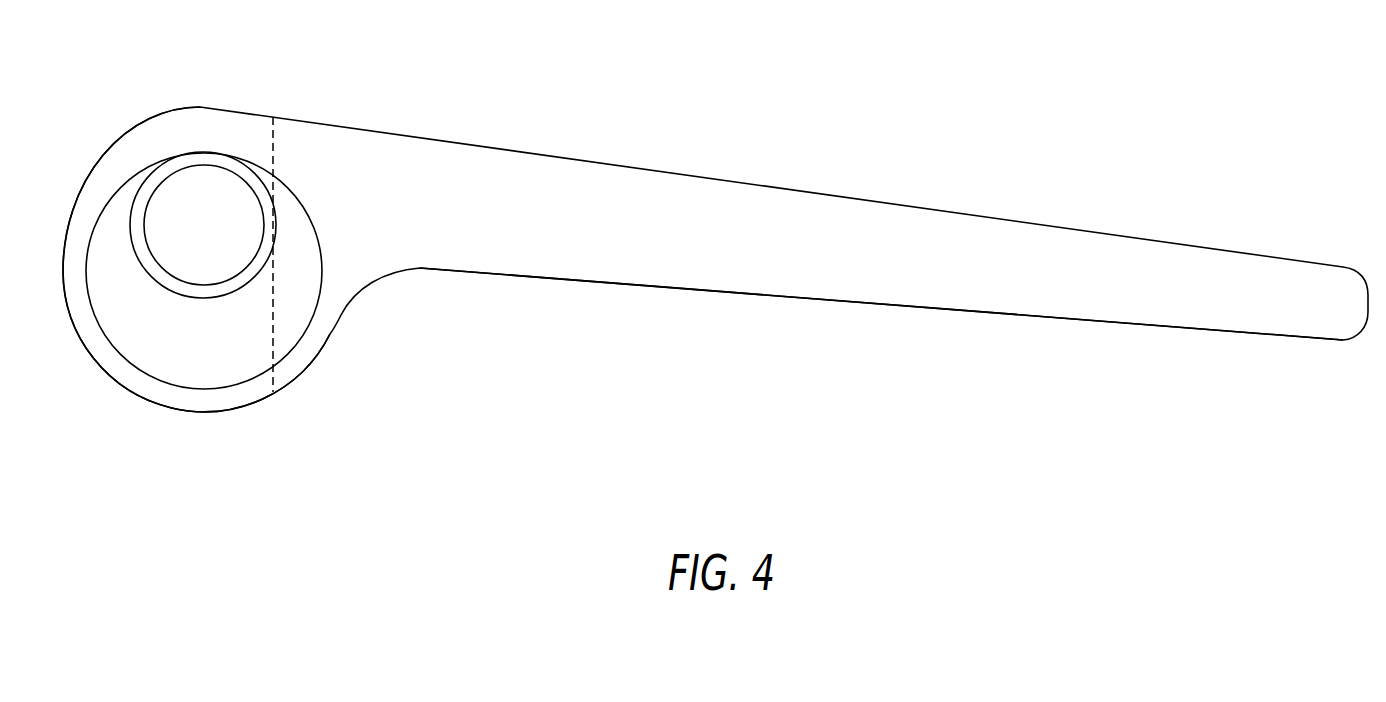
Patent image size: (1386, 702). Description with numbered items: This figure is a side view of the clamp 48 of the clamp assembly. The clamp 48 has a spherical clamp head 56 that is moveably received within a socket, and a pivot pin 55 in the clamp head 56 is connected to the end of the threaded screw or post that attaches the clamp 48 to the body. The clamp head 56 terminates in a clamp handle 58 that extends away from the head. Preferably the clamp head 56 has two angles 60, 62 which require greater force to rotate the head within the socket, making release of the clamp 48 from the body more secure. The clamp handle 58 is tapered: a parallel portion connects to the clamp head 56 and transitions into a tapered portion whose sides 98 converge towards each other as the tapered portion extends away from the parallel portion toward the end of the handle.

The clamp 48 is at (836, 70).
The pivot pin 55 is at (210, 197).
The spherical clamp head 56 is at (203, 413).
The clamp handle 58 is at (1155, 240).
The angle 60 is at (110, 380).
The angle 62 is at (123, 138).
The sides 98 is at (678, 265).